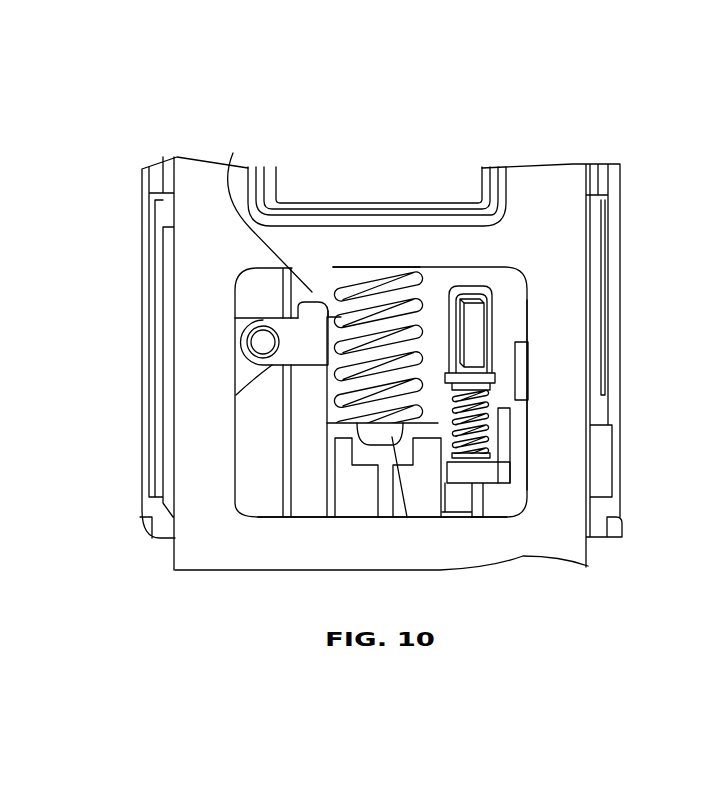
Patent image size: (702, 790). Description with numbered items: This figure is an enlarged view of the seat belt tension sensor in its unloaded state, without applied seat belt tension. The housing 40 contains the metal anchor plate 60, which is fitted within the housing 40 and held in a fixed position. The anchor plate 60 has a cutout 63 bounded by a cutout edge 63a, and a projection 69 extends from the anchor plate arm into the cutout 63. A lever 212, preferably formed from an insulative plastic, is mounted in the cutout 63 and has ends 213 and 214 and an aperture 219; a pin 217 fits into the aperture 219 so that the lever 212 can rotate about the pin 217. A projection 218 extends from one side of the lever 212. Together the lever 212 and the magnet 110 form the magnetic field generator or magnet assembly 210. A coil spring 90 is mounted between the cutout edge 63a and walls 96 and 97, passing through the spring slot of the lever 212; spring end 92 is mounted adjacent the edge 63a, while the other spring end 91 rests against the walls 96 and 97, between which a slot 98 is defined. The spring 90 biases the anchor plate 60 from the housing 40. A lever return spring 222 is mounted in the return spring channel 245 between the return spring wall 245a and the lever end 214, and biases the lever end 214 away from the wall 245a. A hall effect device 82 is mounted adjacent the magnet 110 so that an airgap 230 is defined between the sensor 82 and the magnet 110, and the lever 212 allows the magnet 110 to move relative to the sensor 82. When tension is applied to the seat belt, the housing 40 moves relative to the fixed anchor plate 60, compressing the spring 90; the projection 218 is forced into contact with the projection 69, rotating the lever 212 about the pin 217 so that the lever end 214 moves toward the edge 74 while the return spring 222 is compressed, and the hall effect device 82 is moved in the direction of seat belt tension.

The housing 40 is at (138, 510).
The anchor plate 60 is at (207, 570).
The cutout 63 is at (262, 408).
The cutout edge 63a is at (350, 266).
The projection 69 is at (270, 205).
The edge 74 is at (265, 517).
The hall effect device 82 is at (522, 367).
The coil spring 90 is at (380, 288).
The spring end 91 is at (380, 423).
The spring end 92 is at (425, 270).
The wall 96 is at (441, 440).
The wall 97 is at (343, 425).
The slot 98 is at (417, 435).
The magnet 110 is at (483, 330).
The magnet assembly 210 is at (543, 297).
The lever 212 is at (241, 357).
The lever end 213 is at (262, 394).
The lever end 214 is at (475, 292).
The pin 217 is at (262, 340).
The projection 218 is at (296, 308).
The aperture 219 is at (247, 342).
The return coil spring 222 is at (478, 462).
The airgap 230 is at (505, 377).
The return spring channel 245 is at (490, 440).
The return spring wall 245a is at (498, 473).